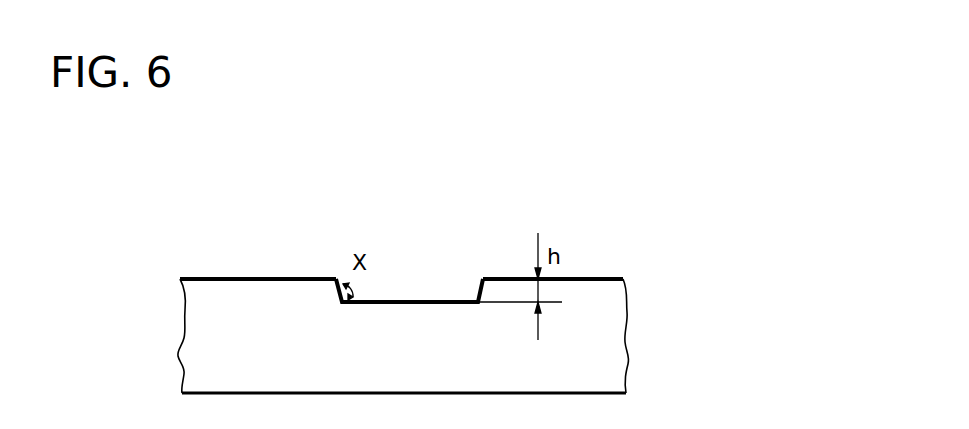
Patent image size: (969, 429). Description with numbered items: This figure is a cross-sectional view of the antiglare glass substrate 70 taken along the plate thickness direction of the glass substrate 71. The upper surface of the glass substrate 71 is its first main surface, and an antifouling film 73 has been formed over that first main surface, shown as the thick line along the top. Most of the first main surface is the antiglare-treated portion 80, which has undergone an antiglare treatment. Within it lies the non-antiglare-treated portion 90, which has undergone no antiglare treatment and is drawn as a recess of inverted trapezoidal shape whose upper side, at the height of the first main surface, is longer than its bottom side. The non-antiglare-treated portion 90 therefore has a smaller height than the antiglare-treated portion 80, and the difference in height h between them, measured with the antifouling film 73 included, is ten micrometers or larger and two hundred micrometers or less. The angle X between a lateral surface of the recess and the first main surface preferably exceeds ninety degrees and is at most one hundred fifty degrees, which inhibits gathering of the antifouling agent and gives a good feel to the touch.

The antiglare glass substrate 70 is at (450, 218).
The glass substrate 71 is at (605, 343).
The antifouling film 73 is at (615, 273).
The antiglare-treated portion 80 is at (593, 279).
The non-antiglare-treated portion 90 is at (408, 300).